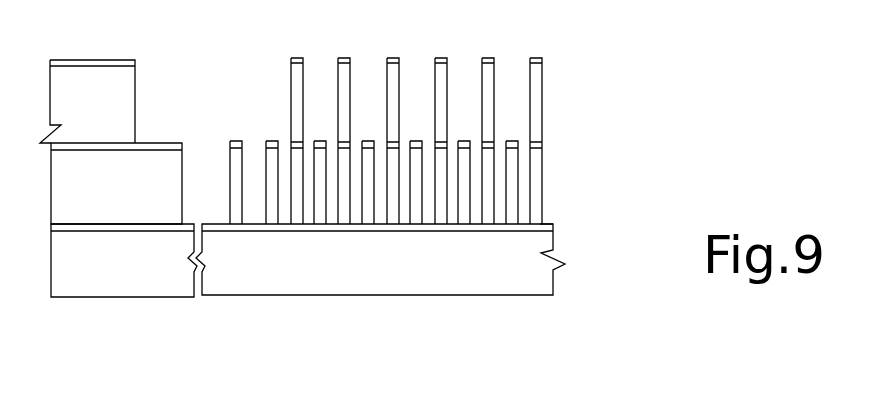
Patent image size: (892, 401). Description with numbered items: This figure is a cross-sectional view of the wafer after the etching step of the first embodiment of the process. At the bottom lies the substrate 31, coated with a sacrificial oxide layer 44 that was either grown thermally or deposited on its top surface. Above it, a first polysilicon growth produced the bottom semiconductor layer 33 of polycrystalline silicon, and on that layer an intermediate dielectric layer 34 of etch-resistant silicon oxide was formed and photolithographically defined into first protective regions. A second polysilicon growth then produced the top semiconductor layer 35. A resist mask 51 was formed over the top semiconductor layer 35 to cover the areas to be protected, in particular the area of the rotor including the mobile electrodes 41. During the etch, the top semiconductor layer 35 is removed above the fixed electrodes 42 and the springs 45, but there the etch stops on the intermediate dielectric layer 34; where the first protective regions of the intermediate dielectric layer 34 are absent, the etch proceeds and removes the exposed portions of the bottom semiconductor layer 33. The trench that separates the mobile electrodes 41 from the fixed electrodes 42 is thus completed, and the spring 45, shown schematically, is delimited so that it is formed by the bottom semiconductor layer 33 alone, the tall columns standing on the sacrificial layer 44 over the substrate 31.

The substrate 31 is at (496, 277).
The bottom semiconductor layer 33 is at (105, 190).
The intermediate dielectric layer 34 is at (277, 146).
The top semiconductor layer 35 is at (297, 113).
The mobile electrodes 41 is at (482, 95).
The fixed electrodes 42 is at (418, 213).
The sacrificial oxide layer 44 is at (555, 226).
The spring 45 is at (235, 197).
The resist mask 51 is at (80, 60).